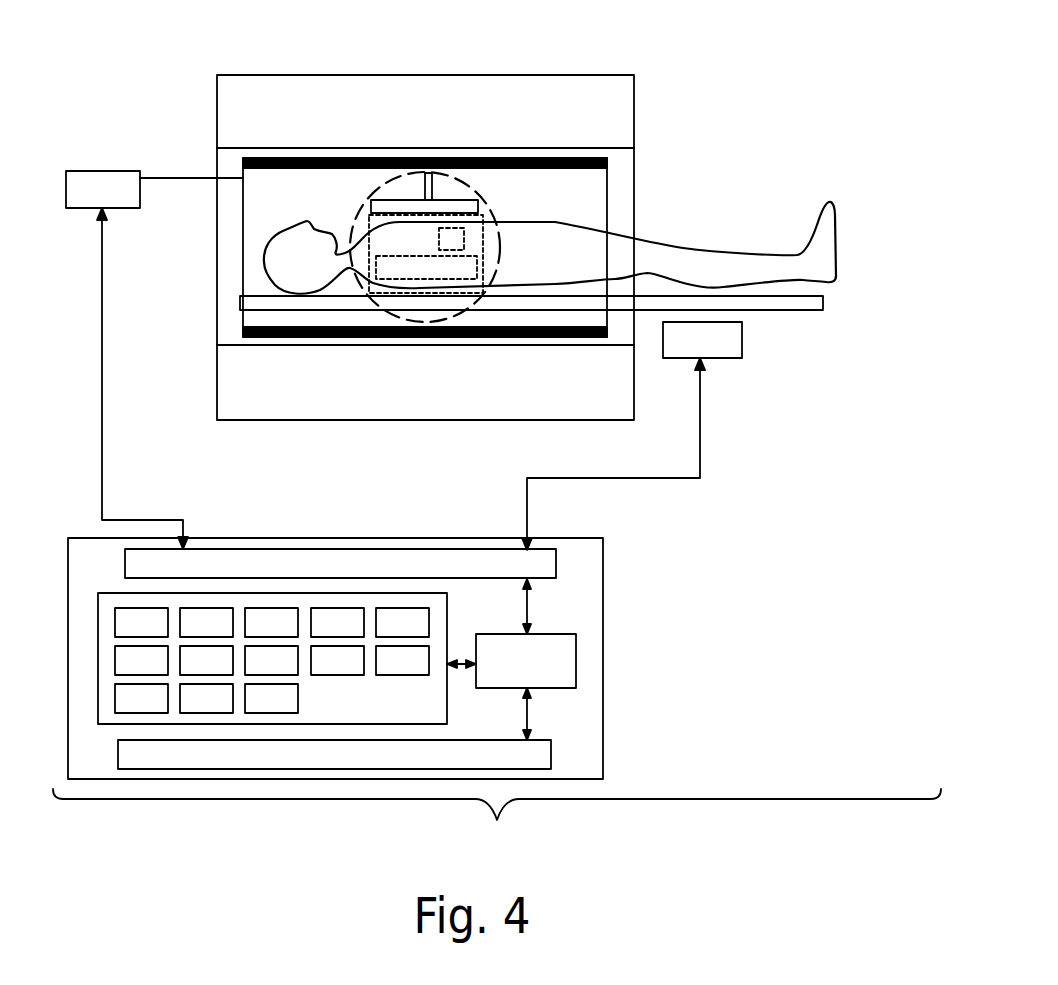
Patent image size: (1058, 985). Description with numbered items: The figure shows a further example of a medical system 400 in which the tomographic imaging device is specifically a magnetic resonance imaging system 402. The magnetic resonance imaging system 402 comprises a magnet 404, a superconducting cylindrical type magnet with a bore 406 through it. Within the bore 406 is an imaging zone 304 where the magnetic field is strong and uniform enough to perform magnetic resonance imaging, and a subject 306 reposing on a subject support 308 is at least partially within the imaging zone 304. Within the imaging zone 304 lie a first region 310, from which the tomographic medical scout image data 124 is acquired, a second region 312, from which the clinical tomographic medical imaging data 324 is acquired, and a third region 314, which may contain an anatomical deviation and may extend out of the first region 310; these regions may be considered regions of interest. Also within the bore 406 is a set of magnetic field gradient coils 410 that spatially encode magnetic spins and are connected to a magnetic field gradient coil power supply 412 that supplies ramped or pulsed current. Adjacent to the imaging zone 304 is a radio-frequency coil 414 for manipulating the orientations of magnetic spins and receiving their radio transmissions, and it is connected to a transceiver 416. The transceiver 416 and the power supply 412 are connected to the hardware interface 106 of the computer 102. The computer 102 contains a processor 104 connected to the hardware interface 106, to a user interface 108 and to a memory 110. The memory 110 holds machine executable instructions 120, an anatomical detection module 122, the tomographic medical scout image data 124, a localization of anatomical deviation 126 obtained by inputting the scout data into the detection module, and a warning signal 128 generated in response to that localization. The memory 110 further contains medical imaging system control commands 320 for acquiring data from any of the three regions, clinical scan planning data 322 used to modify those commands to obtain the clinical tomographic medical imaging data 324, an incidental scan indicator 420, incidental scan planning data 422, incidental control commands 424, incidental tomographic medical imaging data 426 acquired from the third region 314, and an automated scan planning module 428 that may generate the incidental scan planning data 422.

The computer 102 is at (603, 590).
The processor 104 is at (526, 661).
The hardware interface 106 is at (340, 563).
The user interface 108 is at (334, 754).
The memory 110 is at (97, 652).
The machine executable instructions 120 is at (141, 622).
The anatomical detection module 122 is at (206, 622).
The tomographic medical scout image data 124 is at (271, 622).
The localization of anatomical deviation 126 is at (337, 622).
The warning signal 128 is at (402, 622).
The medical imaging system control commands 320 is at (141, 660).
The clinical scan planning data 322 is at (206, 660).
The clinical tomographic medical imaging data 324 is at (271, 660).
The incidental scan indicator 420 is at (337, 660).
The incidental scan planning data 422 is at (402, 660).
The incidental control commands 424 is at (141, 698).
The incidental tomographic medical imaging data 426 is at (206, 698).
The automated scan planning module 428 is at (271, 698).
The imaging zone 304 is at (463, 228).
The subject 306 is at (835, 233).
The subject support 308 is at (792, 310).
The first region 310 is at (369, 232).
The second region 312 is at (398, 279).
The third region 314 is at (493, 222).
The medical system 400 is at (497, 821).
The magnetic resonance imaging system 402 is at (508, 260).
The magnet 404 is at (634, 115).
The bore of magnet 406 is at (563, 188).
The magnetic field gradient coils 410 is at (460, 337).
The magnetic field gradient coil power supply 412 is at (632, 436).
The radio-frequency coil 414 is at (432, 200).
The transceiver 416 is at (154, 360).